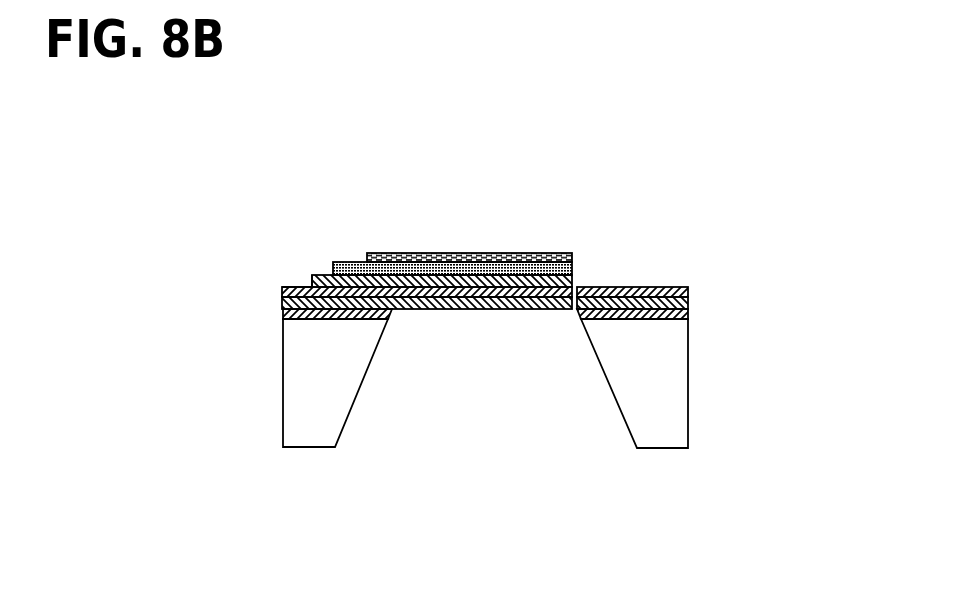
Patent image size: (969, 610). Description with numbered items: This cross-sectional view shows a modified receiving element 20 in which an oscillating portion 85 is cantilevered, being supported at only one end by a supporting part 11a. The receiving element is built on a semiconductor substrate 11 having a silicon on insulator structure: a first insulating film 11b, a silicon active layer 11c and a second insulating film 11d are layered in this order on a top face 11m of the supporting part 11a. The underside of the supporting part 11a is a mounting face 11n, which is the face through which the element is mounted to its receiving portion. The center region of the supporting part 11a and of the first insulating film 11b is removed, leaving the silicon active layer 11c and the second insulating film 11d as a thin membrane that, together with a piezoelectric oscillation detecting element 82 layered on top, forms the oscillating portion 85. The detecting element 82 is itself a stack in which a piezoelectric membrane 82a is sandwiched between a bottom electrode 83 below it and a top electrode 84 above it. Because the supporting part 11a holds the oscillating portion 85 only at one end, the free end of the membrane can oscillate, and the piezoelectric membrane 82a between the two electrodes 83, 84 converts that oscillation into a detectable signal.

The receiving element 20 is at (660, 176).
The semiconductor substrate 11 is at (806, 249).
The supporting part 11a is at (688, 385).
The first insulating film 11b is at (688, 316).
The silicon active layer 11c is at (688, 303).
The second insulating film 11d is at (688, 292).
The top face 11m is at (307, 287).
The mounting face 11n is at (312, 447).
The piezoelectric oscillation detecting element 82 is at (462, 172).
The piezoelectric membrane 82a is at (351, 262).
The bottom electrode 83 is at (323, 275).
The top electrode 84 is at (428, 253).
The oscillating portion 85 is at (510, 328).